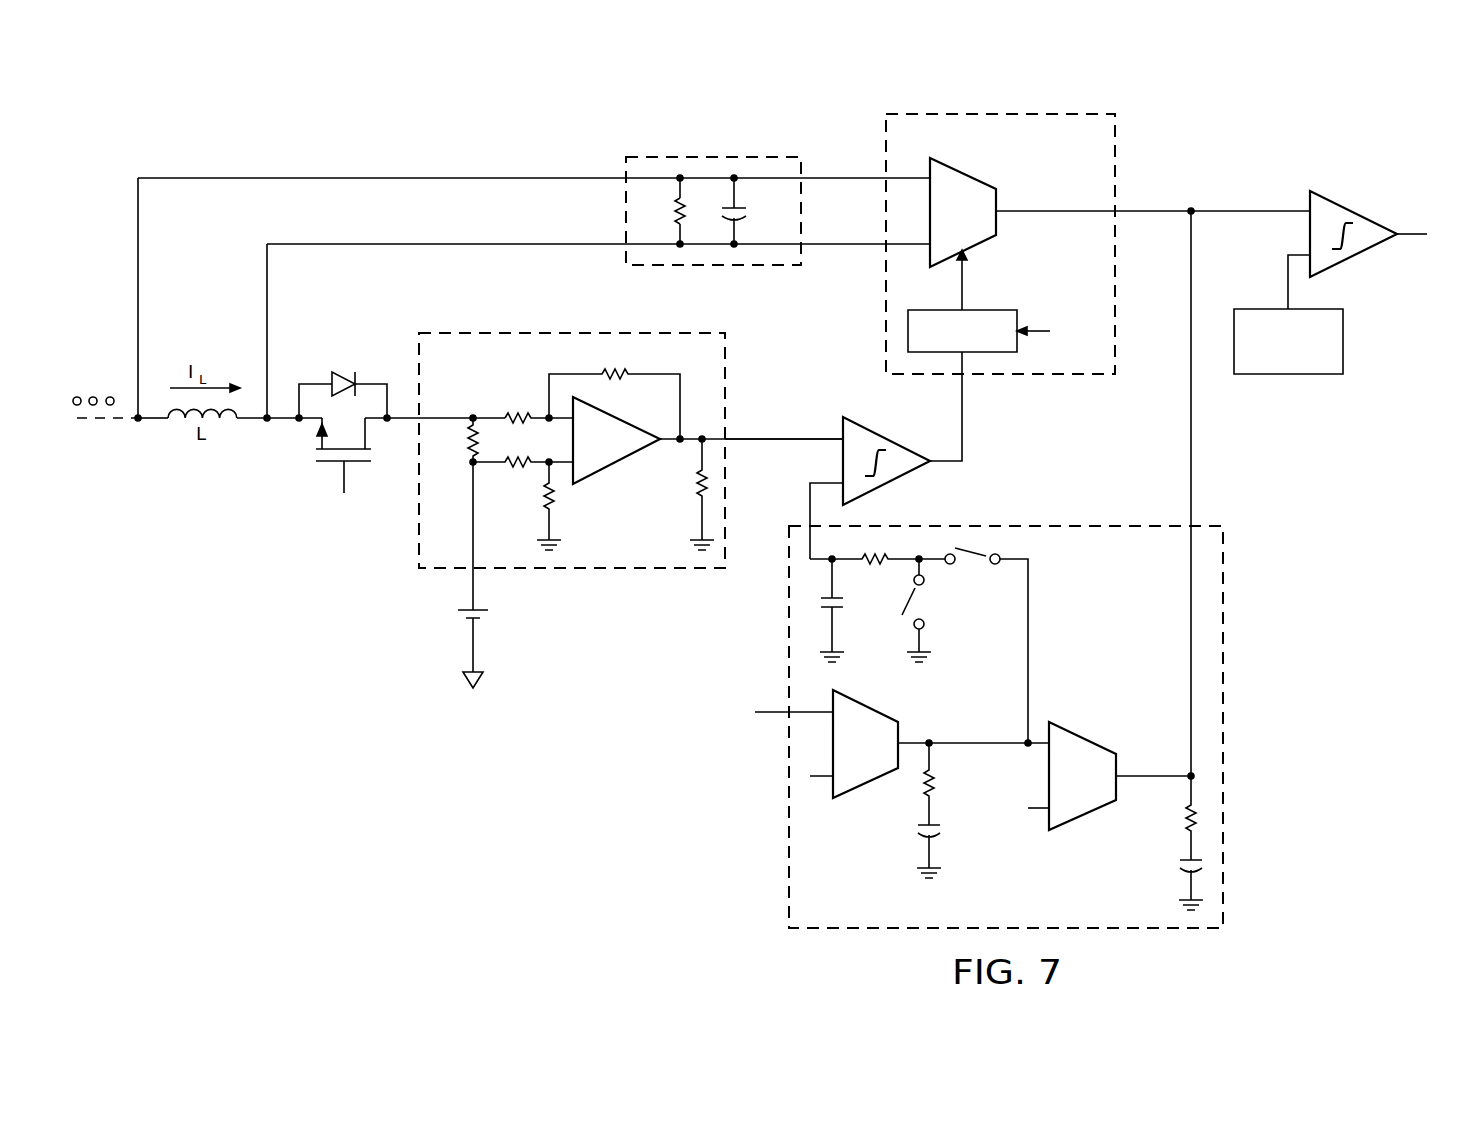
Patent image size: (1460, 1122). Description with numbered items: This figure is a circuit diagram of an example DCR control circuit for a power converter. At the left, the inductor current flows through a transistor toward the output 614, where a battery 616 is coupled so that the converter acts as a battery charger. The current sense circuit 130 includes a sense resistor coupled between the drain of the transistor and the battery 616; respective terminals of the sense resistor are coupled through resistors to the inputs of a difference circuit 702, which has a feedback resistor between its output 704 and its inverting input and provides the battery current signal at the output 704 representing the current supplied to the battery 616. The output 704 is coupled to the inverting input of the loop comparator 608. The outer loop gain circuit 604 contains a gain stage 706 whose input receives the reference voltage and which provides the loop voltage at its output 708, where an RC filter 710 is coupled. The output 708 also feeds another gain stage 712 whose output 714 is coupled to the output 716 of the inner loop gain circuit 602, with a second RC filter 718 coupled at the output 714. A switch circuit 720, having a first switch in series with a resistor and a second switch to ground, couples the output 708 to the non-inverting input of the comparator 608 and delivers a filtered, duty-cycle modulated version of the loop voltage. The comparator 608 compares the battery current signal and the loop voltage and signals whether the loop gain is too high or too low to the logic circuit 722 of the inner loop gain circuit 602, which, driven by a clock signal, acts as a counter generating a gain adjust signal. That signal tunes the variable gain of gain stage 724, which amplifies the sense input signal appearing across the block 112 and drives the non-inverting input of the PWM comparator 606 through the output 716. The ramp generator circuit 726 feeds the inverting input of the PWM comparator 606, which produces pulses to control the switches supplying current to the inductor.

The RC filter network 112 is at (690, 157).
The current sense circuit 130 is at (631, 439).
The inner loop gain circuit 602 is at (1041, 244).
The outer loop gain circuit 604 is at (1000, 727).
The PWM comparator 606 is at (1353, 208).
The loop comparator 608 is at (890, 437).
The output 614 is at (332, 484).
The battery 616 is at (452, 614).
The difference circuit 702 is at (628, 468).
The output 704 is at (778, 445).
The gain stage 706 is at (863, 790).
The output 708 is at (978, 748).
The filter 710 is at (952, 838).
The gain stage 712 is at (1080, 820).
The output 714 is at (1137, 780).
The output 716 is at (1050, 210).
The filter 718 is at (1167, 862).
The switch circuit 720 is at (962, 624).
The logic circuit 722 is at (985, 308).
The gain stage 724 is at (975, 172).
The ramp generator circuit 726 is at (1346, 343).